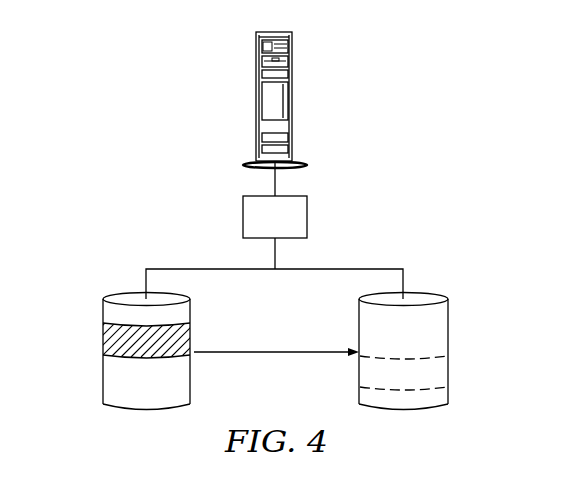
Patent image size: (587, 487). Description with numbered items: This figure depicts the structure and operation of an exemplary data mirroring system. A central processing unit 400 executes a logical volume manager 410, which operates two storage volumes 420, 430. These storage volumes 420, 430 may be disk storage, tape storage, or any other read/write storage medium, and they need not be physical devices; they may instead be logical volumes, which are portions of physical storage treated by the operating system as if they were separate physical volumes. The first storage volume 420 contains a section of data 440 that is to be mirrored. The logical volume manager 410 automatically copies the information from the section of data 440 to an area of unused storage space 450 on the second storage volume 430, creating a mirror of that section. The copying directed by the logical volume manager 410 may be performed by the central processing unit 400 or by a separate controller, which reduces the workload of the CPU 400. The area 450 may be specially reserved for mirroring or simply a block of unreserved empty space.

The central processing unit (CPU) 400 is at (256, 99).
The logical volume manager (LVM) 410 is at (243, 217).
The storage volume 420 is at (98, 388).
The storage volume 430 is at (453, 314).
The section of data 440 is at (103, 345).
The area of unused storage space 450 is at (449, 368).